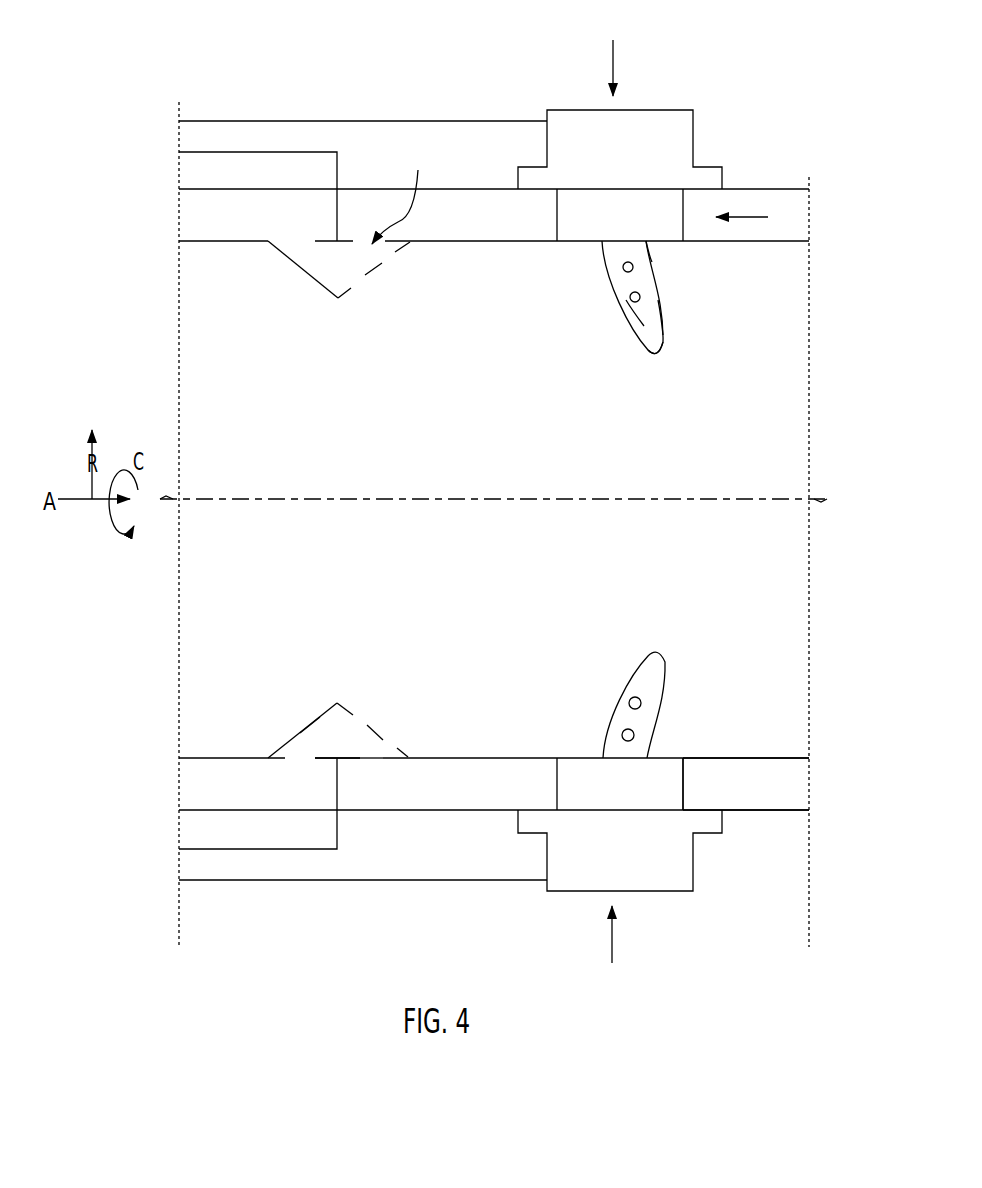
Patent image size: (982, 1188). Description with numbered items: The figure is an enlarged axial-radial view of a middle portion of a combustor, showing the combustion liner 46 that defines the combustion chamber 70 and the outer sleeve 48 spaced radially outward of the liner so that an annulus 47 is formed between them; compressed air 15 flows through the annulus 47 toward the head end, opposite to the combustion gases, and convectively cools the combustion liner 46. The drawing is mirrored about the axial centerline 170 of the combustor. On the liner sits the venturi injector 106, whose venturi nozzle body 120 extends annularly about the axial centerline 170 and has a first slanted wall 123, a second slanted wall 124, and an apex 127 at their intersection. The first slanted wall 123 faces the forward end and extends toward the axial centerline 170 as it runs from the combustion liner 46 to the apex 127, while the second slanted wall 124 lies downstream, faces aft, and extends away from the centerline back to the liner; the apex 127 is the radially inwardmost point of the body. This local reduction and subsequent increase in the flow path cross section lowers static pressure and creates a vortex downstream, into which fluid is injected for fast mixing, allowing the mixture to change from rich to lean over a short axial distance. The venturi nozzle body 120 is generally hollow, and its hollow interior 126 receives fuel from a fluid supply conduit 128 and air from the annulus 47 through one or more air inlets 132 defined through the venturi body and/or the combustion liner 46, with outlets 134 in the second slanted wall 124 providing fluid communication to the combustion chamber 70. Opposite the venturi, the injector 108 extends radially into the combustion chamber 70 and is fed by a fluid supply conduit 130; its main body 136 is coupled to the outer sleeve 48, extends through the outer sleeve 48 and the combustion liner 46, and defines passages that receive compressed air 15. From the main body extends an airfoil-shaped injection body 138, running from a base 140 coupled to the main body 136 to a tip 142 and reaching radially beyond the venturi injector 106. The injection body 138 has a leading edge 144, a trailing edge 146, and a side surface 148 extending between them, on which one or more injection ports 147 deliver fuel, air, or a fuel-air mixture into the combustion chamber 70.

The compressed air 15 is at (613, 65).
The combustion liner 46 is at (758, 757).
The annulus 47 is at (759, 798).
The outer sleeve 48 is at (770, 812).
The combustion chamber 70 is at (463, 436).
The venturi injector 106 is at (298, 292).
The injector 108 is at (708, 905).
The venturi nozzle body 120 is at (297, 733).
The first slanted wall 123 is at (322, 717).
The second slanted wall 124 is at (372, 729).
The hollow interior 126 is at (358, 750).
The apex 127 is at (337, 703).
The fluid supply conduit 128 is at (337, 165).
The fluid supply conduit 130 is at (383, 120).
The air inlet 132 is at (374, 768).
The outlet 134 is at (402, 738).
The main body 136 is at (655, 140).
The airfoil-shaped injection body 138 is at (634, 280).
The base 140 is at (650, 244).
The tip 142 is at (660, 348).
The leading edge 144 is at (612, 290).
The trailing edge 146 is at (656, 316).
The injection port 147 is at (630, 303).
The side surface 148 is at (618, 258).
The axial centerline 170 is at (296, 498).